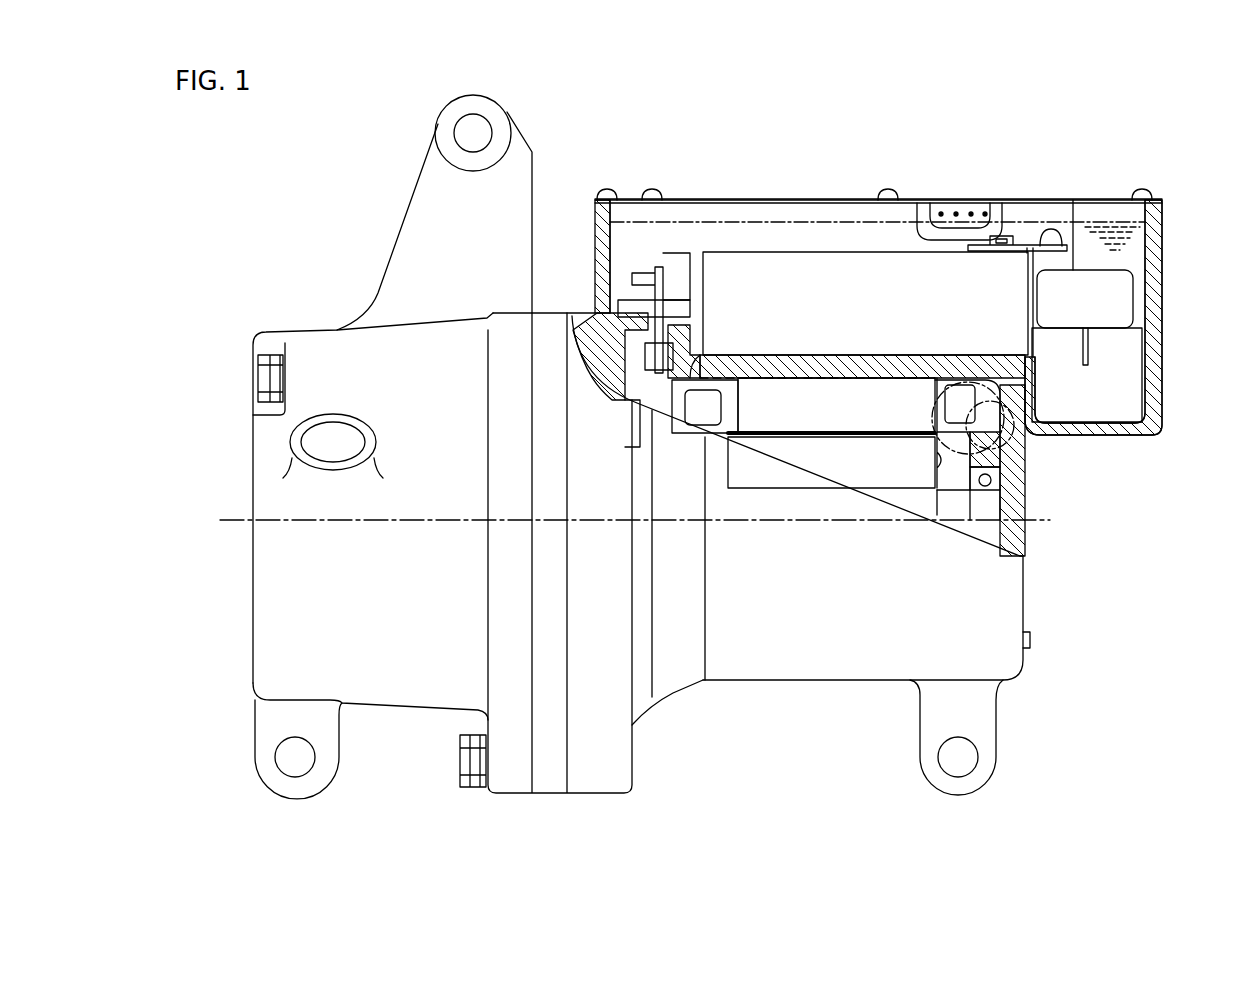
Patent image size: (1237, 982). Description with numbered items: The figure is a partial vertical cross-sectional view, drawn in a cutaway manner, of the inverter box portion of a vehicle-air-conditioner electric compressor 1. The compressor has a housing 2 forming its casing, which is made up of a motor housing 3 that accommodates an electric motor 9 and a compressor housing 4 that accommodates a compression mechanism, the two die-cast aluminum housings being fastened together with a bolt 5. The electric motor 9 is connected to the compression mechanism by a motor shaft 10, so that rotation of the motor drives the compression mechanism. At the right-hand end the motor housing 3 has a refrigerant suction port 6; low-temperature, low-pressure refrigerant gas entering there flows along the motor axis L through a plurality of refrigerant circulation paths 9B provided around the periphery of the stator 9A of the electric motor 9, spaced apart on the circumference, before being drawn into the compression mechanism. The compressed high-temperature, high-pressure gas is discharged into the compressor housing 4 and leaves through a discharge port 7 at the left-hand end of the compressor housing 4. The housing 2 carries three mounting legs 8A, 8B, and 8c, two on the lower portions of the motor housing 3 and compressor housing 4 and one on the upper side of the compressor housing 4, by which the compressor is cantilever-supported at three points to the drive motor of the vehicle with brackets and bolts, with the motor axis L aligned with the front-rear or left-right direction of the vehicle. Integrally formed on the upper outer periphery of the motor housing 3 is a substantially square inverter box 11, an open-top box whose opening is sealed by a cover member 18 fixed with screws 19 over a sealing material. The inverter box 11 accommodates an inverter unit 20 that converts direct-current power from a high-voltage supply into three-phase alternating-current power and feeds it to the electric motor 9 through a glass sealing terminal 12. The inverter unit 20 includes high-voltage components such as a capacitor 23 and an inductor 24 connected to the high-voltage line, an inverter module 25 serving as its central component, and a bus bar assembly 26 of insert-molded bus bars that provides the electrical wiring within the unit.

The vehicle-air-conditioner electric compressor 1 is at (625, 148).
The housing 2 is at (676, 697).
The motor housing 3 is at (835, 657).
The compressor housing 4 is at (406, 688).
The bolt 5 is at (472, 778).
The refrigerant suction port 6 is at (988, 427).
The discharge port 7 is at (337, 430).
The mounting leg 8A is at (930, 765).
The mounting leg 8B is at (296, 790).
The mounting leg 8c is at (433, 192).
The electric motor 9 is at (833, 462).
The stator 9A is at (773, 395).
The refrigerant circulation paths 9B is at (858, 385).
The motor shaft 10 is at (910, 508).
The inverter box 11 is at (1163, 290).
The glass sealing terminal 12 is at (658, 293).
The cover member 18 is at (740, 199).
The screws 19 is at (607, 190).
The inverter unit 20 is at (828, 249).
The capacitor 23 is at (1133, 247).
The inductor 24 is at (1120, 313).
The inverter module 25 is at (900, 262).
The bus bar assembly 26 is at (1025, 245).
The motor axis L is at (853, 524).